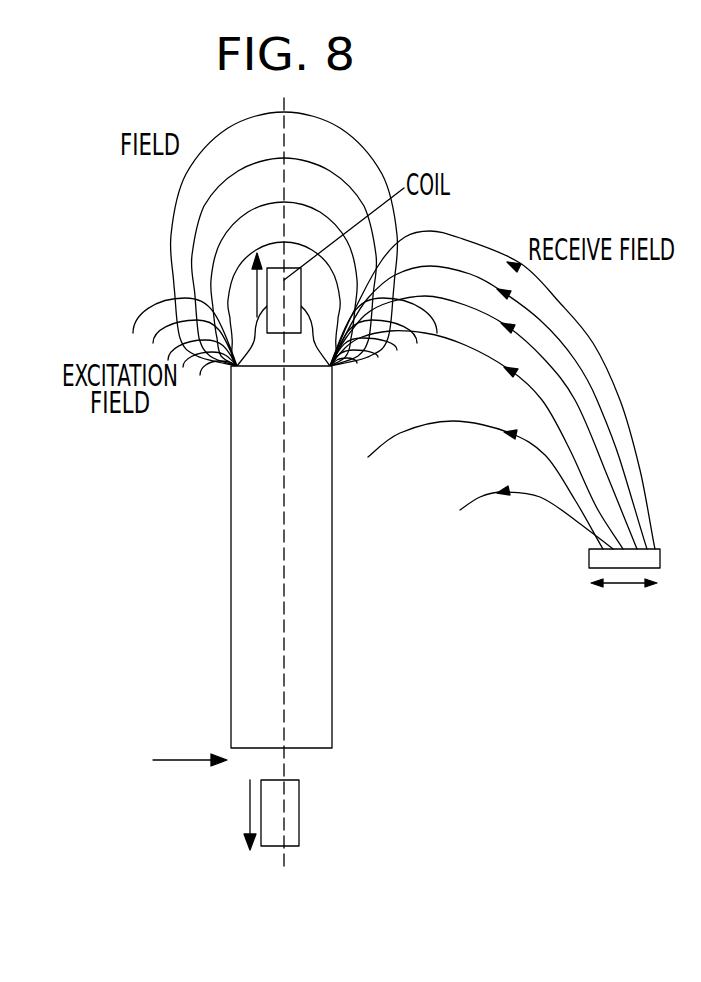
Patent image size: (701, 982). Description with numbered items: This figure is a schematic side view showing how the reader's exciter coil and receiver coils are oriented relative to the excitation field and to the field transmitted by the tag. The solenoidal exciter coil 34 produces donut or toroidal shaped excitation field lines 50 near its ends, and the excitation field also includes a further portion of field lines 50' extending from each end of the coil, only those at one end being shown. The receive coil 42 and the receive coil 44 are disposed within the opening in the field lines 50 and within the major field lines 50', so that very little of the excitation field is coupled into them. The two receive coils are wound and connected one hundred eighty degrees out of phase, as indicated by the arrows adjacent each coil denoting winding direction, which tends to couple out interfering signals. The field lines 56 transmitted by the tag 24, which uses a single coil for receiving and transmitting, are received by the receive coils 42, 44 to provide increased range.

The excitation field lines 50' is at (287, 227).
The excitation field lines 50 is at (273, 336).
The receive coil 42 is at (297, 314).
The field lines transmitted by the tag 56 is at (592, 343).
The exciter coil 34 is at (332, 631).
The tag 24 is at (589, 560).
The receive coil 44 is at (293, 827).